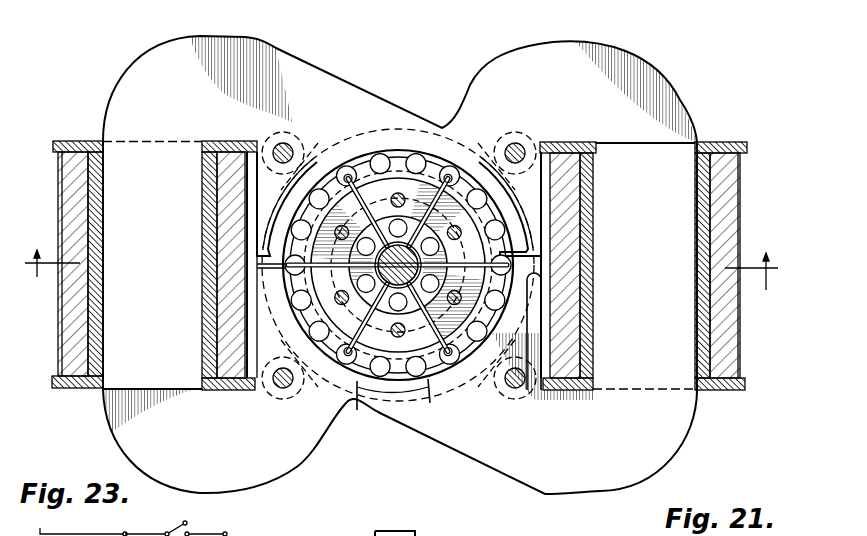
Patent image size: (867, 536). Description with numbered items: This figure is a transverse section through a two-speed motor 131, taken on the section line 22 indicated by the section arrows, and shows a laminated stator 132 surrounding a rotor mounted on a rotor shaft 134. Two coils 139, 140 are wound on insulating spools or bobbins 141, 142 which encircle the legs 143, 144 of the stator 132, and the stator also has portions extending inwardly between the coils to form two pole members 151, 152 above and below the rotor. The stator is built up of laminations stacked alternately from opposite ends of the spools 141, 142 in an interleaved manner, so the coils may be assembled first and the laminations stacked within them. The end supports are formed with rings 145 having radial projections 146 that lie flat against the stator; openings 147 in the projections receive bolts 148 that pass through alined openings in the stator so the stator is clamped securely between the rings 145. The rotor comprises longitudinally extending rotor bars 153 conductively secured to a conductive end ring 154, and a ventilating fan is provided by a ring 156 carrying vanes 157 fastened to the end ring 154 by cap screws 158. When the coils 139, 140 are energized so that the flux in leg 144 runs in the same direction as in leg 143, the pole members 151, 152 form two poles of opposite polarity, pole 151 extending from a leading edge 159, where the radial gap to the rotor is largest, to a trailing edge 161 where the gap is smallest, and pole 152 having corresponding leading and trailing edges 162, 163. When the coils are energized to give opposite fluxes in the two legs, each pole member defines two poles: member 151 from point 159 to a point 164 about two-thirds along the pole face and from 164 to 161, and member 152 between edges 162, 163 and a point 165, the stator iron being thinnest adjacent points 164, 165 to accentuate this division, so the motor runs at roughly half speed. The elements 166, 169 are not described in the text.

In FIG. 21, the two-speed motor 131 is at (650, 54).
In FIG. 21, the laminated stator 132 is at (668, 100).
In FIG. 21, the rotor shaft 134 is at (403, 534).
In FIG. 21, the coil 139 is at (740, 221).
In FIG. 21, the coil 140 is at (62, 302).
In FIG. 21, the insulating spool or bobbin 141 is at (733, 147).
In FIG. 21, the insulating spool or bobbin 142 is at (84, 141).
In FIG. 21, the leg 143 is at (617, 266).
In FIG. 21, the leg 144 is at (180, 265).
In FIG. 21, the ring 145 is at (358, 126).
In FIG. 21, the radial projection 146 is at (505, 132).
In FIG. 21, the opening 147 is at (509, 142).
In FIG. 21, the bolt 148 is at (279, 143).
In FIG. 21, the pole member 151 is at (398, 222).
In FIG. 21, the pole member 152 is at (402, 396).
In FIG. 21, the rotor bar 153 is at (411, 122).
In FIG. 21, the conductive end ring 154 is at (414, 259).
In FIG. 21, the ring 156 is at (318, 363).
In FIG. 21, the vane 157 is at (397, 331).
In FIG. 21, the cap screw 158 is at (428, 382).
In FIG. 21, the leading edge 159 is at (258, 256).
In FIG. 21, the trailing edge 161 is at (521, 254).
In FIG. 21, the leading edge 162 is at (528, 288).
In FIG. 21, the trailing edge 163 is at (262, 266).
In FIG. 21, the point 164 is at (431, 134).
In FIG. 21, the point 165 is at (357, 397).
In FIG. 23, the contact 166 is at (238, 530).
In FIG. 23, the switch arm 169 is at (200, 512).
In FIG. 21, the section line 22- 22 is at (398, 269).